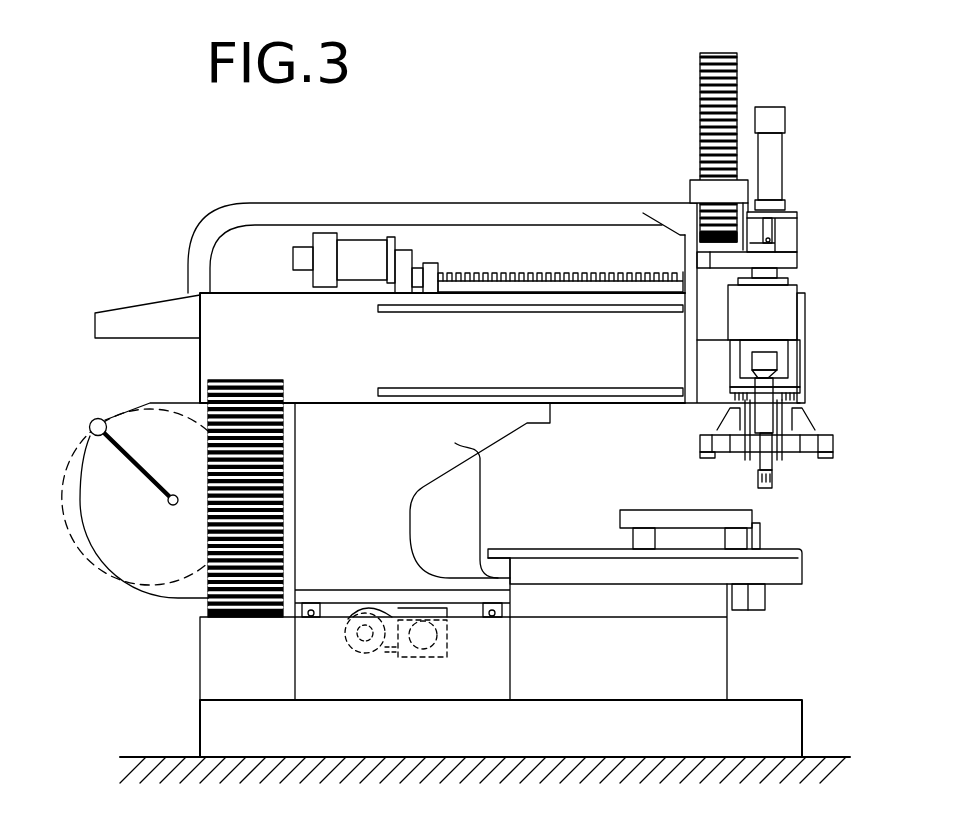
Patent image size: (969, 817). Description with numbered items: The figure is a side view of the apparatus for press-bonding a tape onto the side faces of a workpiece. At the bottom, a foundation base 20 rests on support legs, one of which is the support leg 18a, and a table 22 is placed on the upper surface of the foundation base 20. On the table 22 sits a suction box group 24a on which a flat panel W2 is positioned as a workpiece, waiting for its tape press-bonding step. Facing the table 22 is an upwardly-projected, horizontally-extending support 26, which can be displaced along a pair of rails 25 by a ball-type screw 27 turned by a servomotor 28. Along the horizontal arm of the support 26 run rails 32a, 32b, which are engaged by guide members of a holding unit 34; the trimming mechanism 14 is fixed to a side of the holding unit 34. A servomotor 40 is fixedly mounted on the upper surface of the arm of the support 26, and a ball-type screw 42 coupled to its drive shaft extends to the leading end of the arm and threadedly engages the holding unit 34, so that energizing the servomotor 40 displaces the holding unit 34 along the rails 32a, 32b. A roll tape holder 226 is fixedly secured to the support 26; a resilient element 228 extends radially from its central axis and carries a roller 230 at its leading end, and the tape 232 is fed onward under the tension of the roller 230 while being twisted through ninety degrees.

The trimming mechanism 14 is at (807, 358).
The support leg 18a is at (768, 716).
The foundation base 20 is at (712, 640).
The table 22 is at (792, 576).
The suction box group 24a is at (738, 538).
The rails 25 is at (313, 603).
The support 26 is at (213, 335).
The ball-type screw 27 is at (358, 641).
The servomotor 28 is at (447, 655).
The rail 32a is at (517, 313).
The rail 32b is at (550, 392).
The holding unit 34 is at (792, 233).
The servomotor 40 is at (353, 247).
The ball-type screw 42 is at (470, 272).
The roll tape holder 226 is at (100, 566).
The resilient element 228 is at (118, 454).
The roller 230 is at (93, 420).
The tape 232 is at (156, 581).
The flat panel W2 is at (660, 510).